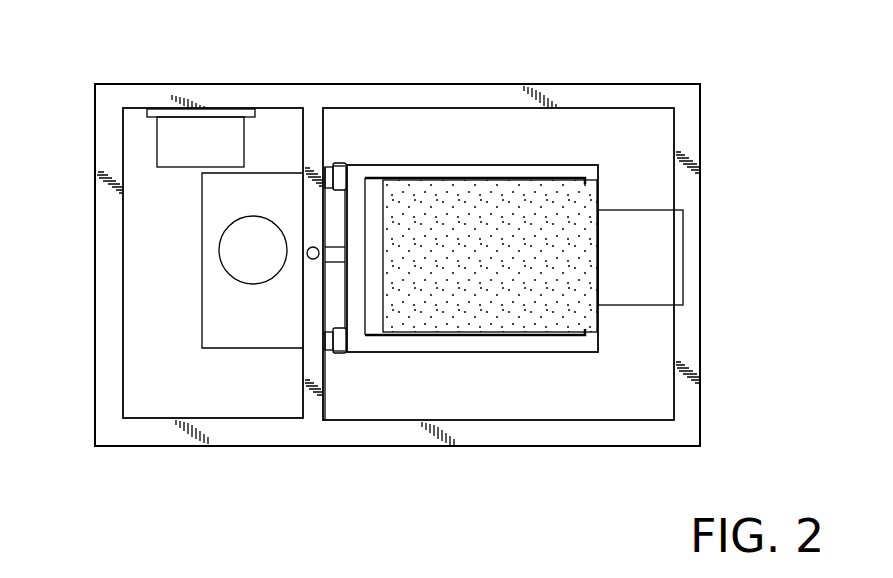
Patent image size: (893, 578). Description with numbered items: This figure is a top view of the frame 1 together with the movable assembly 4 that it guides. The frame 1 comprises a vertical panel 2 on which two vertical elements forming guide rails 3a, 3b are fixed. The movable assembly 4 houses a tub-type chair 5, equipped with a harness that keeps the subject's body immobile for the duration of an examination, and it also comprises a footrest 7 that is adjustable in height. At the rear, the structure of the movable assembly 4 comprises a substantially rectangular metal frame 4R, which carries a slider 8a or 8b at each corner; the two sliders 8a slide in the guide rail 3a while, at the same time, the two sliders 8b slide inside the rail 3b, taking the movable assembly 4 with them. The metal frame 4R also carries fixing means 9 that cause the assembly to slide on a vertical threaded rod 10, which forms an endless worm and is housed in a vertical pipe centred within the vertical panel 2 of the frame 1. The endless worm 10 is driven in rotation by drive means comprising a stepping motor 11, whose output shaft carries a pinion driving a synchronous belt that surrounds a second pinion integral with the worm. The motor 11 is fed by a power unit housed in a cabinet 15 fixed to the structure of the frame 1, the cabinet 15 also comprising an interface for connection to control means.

The frame 1 is at (414, 447).
The vertical panel 2 is at (303, 135).
The guide rail 3a is at (335, 165).
The guide rail 3b is at (326, 346).
The movable assembly 4 is at (520, 353).
The metal frame 4R is at (360, 310).
The chair 5 is at (525, 192).
The footrest 7 is at (628, 224).
The slider 8a is at (348, 162).
The slider 8b is at (340, 353).
The fixing means 9 is at (333, 247).
The vertical threaded rod 10 is at (318, 260).
The stepping motor 11 is at (224, 253).
The cabinet 15 is at (157, 141).